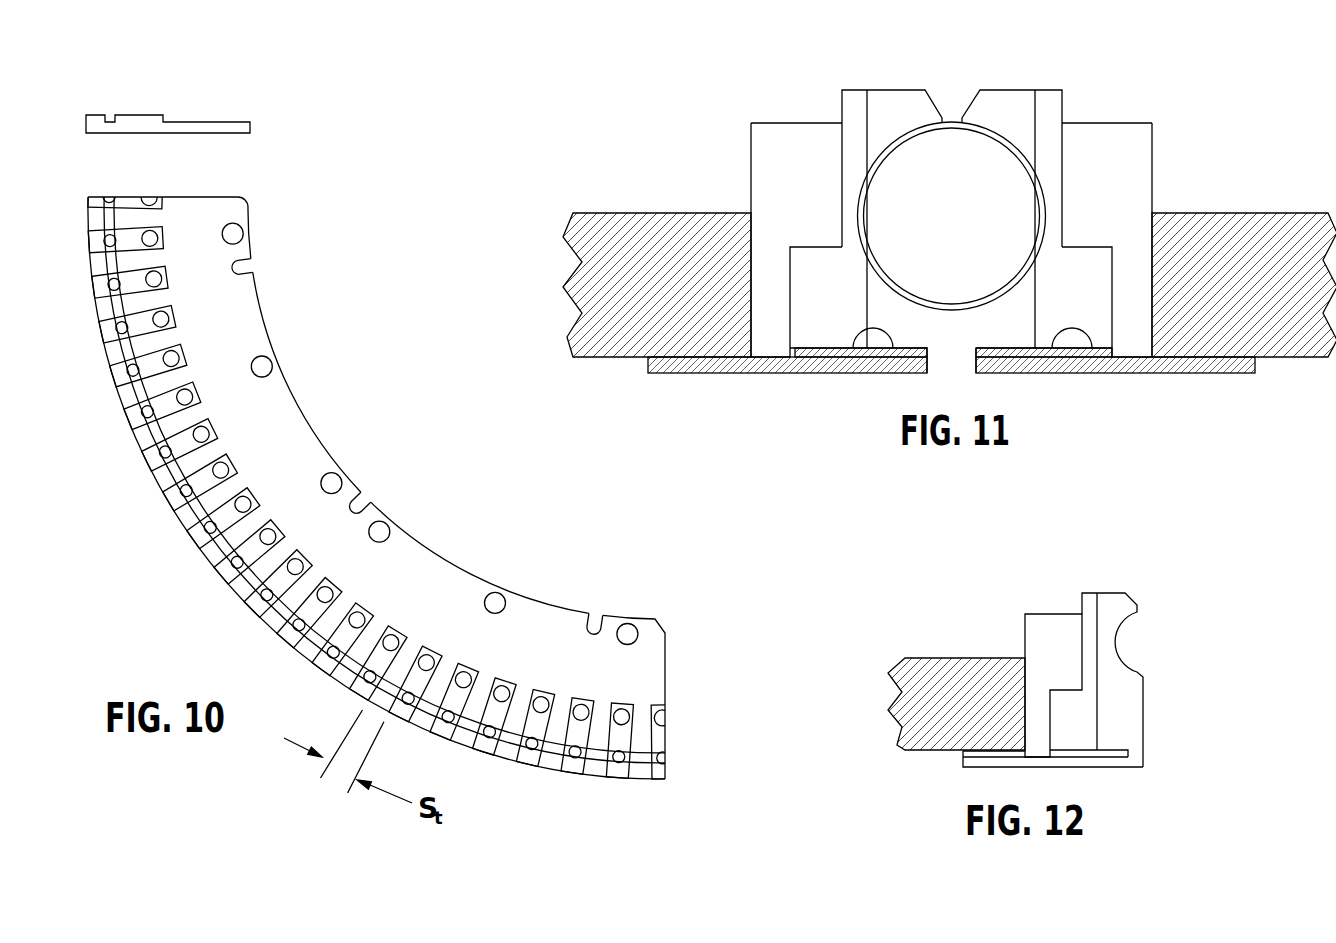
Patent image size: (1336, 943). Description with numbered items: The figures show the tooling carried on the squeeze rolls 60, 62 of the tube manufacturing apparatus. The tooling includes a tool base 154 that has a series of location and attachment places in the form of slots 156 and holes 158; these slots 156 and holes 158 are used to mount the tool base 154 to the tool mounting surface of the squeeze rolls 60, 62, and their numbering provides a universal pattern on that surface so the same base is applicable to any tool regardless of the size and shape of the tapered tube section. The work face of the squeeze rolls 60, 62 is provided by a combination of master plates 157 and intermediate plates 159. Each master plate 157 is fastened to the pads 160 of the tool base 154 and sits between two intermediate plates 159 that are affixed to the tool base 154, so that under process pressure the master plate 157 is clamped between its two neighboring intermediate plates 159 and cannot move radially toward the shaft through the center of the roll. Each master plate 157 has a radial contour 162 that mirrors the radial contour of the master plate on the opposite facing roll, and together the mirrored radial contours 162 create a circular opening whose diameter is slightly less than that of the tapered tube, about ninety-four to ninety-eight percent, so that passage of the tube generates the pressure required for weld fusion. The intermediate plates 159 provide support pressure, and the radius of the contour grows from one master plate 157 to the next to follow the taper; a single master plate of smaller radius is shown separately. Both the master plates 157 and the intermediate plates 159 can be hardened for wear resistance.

In FIG. 11, the squeeze roll 60 is at (643, 235).
In FIG. 11, the squeeze roll 62 is at (1283, 233).
In FIG. 10, the tool base 154 is at (195, 227).
In FIG. 11, the tool base 154 is at (718, 366).
In FIG. 10, the slot 156 is at (244, 262).
In FIG. 11, the master plate 157 is at (884, 107).
In FIG. 12, the master plate 157 is at (1119, 602).
In FIG. 10, the hole 158 is at (392, 523).
In FIG. 11, the intermediate plate 159 is at (778, 180).
In FIG. 12, the intermediate plate 159 is at (1050, 637).
In FIG. 11, the pad 160 is at (853, 348).
In FIG. 11, the radial contour 162 is at (857, 208).
In FIG. 12, the radial contour 162 is at (1113, 645).